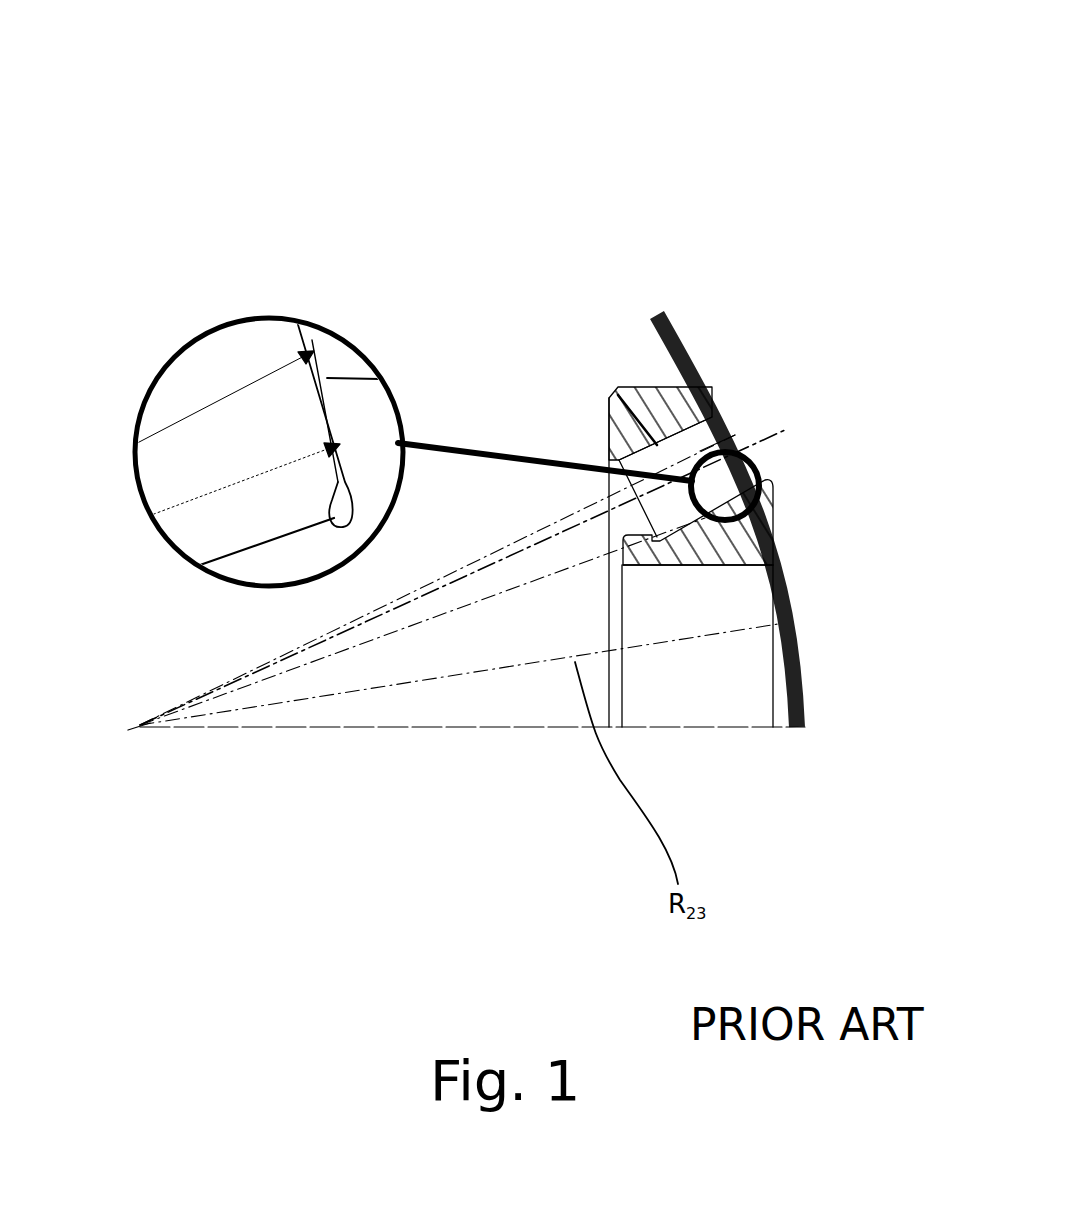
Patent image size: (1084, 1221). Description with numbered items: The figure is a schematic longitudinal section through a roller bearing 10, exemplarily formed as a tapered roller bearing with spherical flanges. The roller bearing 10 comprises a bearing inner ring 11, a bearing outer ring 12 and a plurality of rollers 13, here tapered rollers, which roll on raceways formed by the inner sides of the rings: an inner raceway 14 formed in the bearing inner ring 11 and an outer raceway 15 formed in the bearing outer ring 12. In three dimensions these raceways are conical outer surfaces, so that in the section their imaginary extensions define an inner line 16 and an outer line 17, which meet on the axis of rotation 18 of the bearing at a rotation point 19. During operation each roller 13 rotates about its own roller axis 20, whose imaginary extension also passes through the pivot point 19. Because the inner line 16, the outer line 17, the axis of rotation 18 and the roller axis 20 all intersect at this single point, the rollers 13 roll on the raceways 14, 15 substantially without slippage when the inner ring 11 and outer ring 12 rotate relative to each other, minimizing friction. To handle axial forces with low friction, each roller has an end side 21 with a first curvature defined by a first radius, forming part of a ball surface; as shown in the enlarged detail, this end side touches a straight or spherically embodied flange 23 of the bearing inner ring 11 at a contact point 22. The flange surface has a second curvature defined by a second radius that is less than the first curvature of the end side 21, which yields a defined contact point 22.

The roller bearing 10 is at (643, 142).
The bearing inner ring 11 is at (682, 565).
The bearing outer ring 12 is at (655, 387).
The rollers 13 is at (688, 457).
The inner raceway 14 is at (697, 565).
The outer raceway 15 is at (613, 393).
The inner line 16 is at (452, 610).
The outer line 17 is at (265, 655).
The axis of rotation 18 is at (315, 727).
The rotation point 19 is at (142, 727).
The roller axis 20 is at (770, 437).
The end side 21 is at (725, 437).
The contact point 22 is at (343, 443).
The flange 23 is at (768, 478).